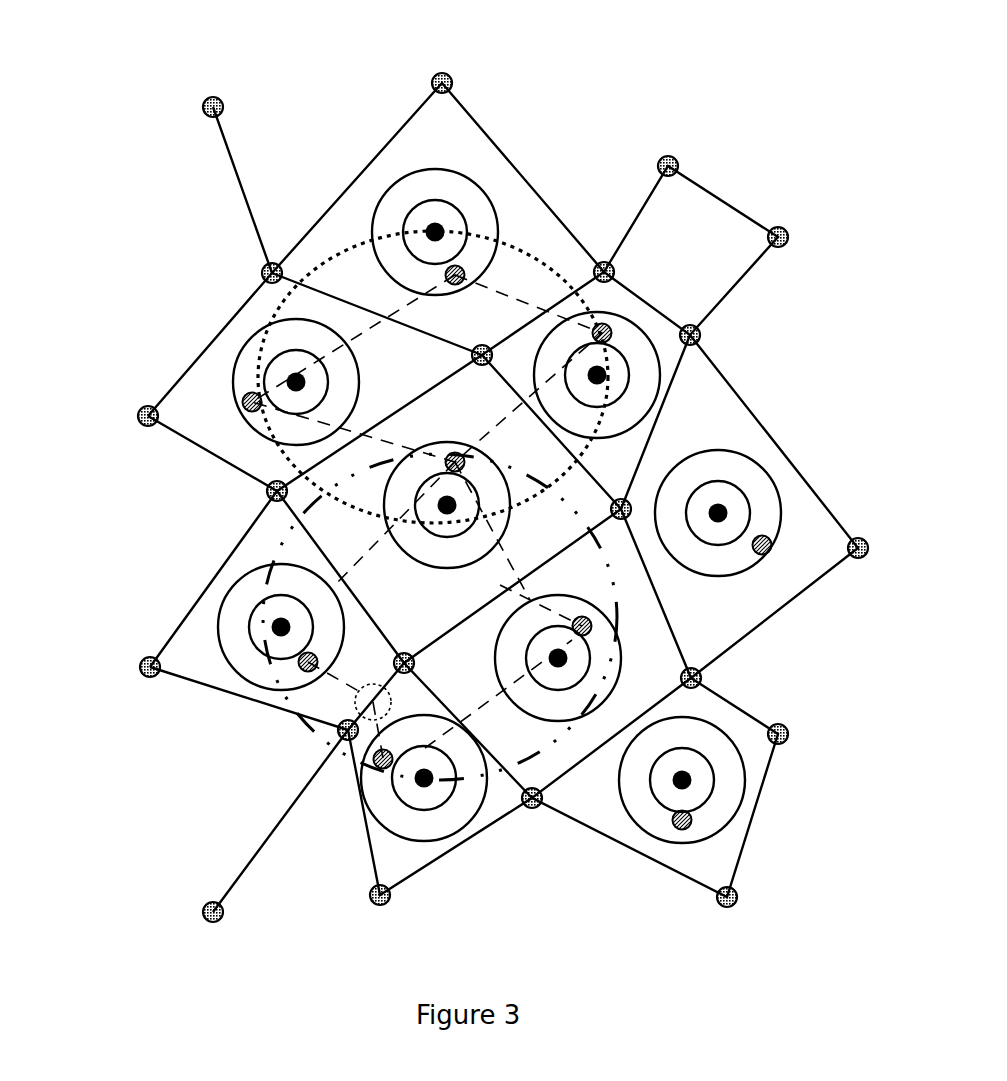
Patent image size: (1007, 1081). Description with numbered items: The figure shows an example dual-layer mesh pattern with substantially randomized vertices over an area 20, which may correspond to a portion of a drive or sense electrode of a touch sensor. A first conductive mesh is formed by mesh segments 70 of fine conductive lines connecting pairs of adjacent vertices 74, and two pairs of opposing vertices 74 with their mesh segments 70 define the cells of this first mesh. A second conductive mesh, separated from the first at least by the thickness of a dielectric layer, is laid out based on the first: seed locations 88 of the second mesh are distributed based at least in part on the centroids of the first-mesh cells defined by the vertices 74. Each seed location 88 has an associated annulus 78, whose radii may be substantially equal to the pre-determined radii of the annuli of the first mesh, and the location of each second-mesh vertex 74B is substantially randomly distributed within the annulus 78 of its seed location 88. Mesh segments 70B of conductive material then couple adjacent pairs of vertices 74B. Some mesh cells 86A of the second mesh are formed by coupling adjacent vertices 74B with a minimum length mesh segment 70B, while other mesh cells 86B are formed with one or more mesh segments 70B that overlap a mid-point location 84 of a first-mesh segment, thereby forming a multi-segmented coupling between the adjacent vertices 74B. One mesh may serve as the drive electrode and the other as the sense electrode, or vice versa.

The area 20 is at (573, 52).
The mesh segments 70 is at (370, 837).
The mesh segments of the second conductive mesh 70B is at (357, 338).
The vertices 74 is at (148, 416).
The vertices of the second conductive mesh 74B is at (765, 553).
The annulus 78 is at (728, 573).
The mid-point location 84 is at (391, 700).
The mesh cells of the second conductive mesh 86A is at (278, 310).
The mesh cells of the second conductive mesh 86B is at (287, 535).
The seed locations 88 is at (608, 403).